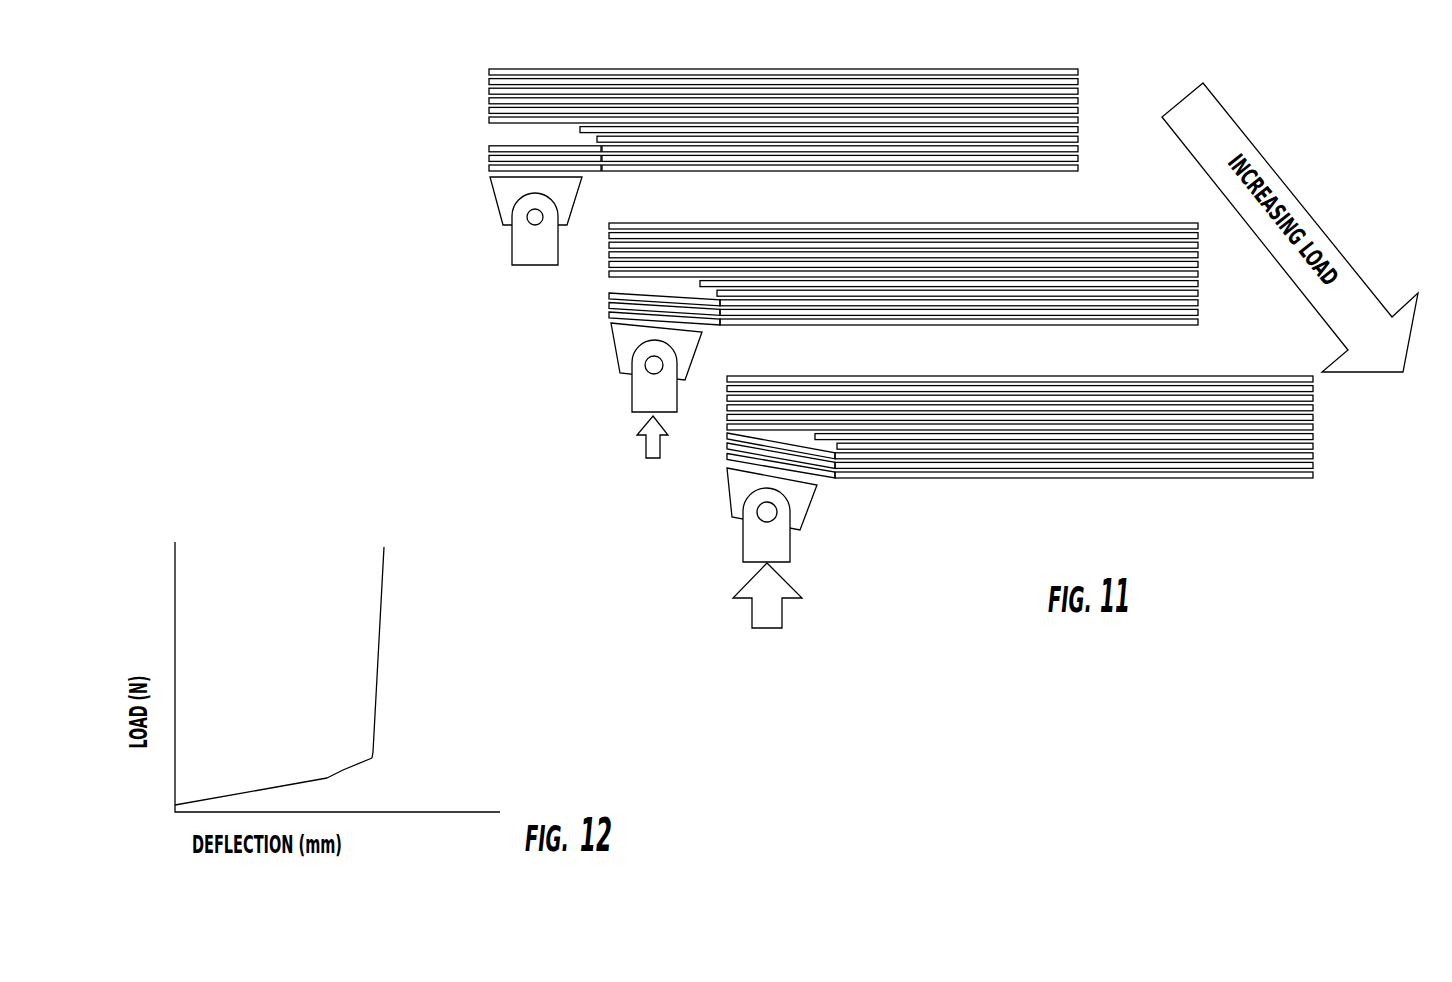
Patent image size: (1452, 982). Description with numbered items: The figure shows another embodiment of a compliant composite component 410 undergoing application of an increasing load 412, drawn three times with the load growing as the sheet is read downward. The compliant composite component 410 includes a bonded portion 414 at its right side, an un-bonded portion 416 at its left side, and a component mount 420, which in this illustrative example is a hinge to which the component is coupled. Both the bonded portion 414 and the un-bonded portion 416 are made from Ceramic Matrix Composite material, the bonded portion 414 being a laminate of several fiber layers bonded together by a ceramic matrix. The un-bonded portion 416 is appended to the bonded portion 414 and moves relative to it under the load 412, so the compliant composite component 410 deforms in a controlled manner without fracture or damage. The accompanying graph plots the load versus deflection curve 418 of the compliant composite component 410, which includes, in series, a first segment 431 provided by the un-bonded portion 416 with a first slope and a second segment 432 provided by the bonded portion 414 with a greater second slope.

In FIG. 11, the compliant composite component 410 is at (883, 359).
In FIG. 11, the load 412 is at (654, 458).
In FIG. 11, the bonded portion 414 is at (965, 58).
In FIG. 11, the un-bonded portion 416 is at (593, 178).
In FIG. 12, the load vs. deflection curve 418 is at (332, 676).
In FIG. 11, the component mount 420 is at (533, 257).
In FIG. 12, the first segment 431 is at (343, 770).
In FIG. 12, the second segment 432 is at (375, 652).